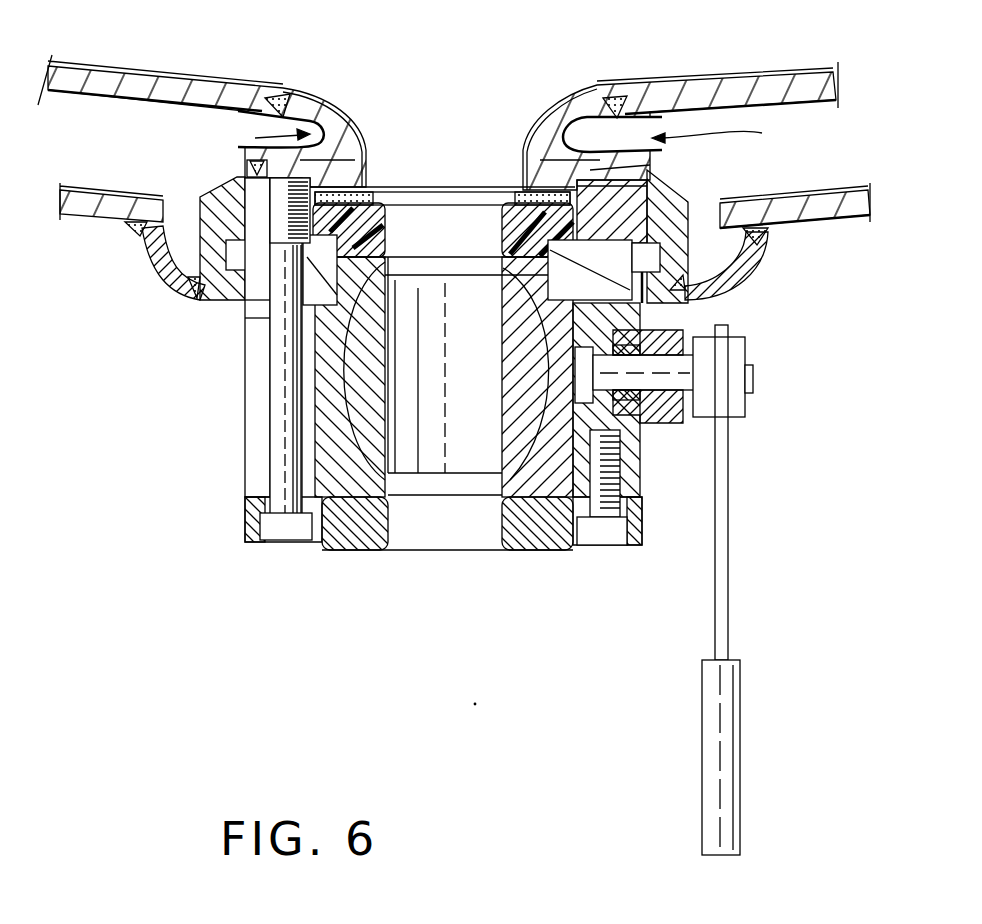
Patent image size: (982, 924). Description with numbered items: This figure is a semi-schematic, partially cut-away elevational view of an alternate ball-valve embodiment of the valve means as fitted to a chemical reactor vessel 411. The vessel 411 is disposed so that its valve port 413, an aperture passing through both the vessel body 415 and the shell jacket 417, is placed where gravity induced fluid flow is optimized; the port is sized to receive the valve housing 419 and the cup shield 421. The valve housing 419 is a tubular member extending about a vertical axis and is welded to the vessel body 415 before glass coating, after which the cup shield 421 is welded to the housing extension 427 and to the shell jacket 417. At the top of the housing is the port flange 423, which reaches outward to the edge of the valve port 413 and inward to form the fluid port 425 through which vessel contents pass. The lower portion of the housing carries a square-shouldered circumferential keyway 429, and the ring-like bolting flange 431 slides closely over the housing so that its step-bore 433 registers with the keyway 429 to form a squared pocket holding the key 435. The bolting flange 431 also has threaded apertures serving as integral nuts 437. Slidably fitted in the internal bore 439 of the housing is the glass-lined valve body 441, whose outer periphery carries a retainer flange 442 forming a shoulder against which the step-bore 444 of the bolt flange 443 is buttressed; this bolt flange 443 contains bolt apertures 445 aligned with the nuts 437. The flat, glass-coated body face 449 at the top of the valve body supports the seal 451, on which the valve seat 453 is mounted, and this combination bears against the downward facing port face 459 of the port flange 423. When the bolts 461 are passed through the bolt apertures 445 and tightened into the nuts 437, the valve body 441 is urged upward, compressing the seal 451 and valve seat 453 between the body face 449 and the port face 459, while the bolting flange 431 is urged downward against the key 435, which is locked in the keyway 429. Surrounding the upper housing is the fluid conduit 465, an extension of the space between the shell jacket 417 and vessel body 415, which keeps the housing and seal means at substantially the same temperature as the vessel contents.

The vessel 411 is at (750, 23).
The valve port 413 is at (612, 93).
The vessel body 415 is at (110, 72).
The shell jacket 417 is at (835, 212).
The valve housing 419 is at (262, 131).
The cup shield 421 is at (142, 242).
The port flange 423 is at (285, 93).
The fluid port 425 is at (356, 97).
The extension 427 is at (650, 153).
The keyway 429 is at (747, 257).
The bolting flange 431 is at (187, 243).
The step-bore 433 is at (235, 298).
The key 435 is at (640, 317).
The nuts 437 is at (247, 192).
The internal bore 439 is at (200, 197).
The valve body 441 is at (253, 467).
The retainer flange 442 is at (262, 318).
The bolt flange 443 is at (640, 327).
The step-bore 444 is at (253, 300).
The bolt apertures 445 is at (280, 335).
The body face 449 is at (527, 172).
The seal 451 is at (372, 292).
The valve seat 453 is at (412, 217).
The port face 459 is at (370, 184).
The bolts 461 is at (275, 478).
The fluid conduit 465 is at (691, 134).